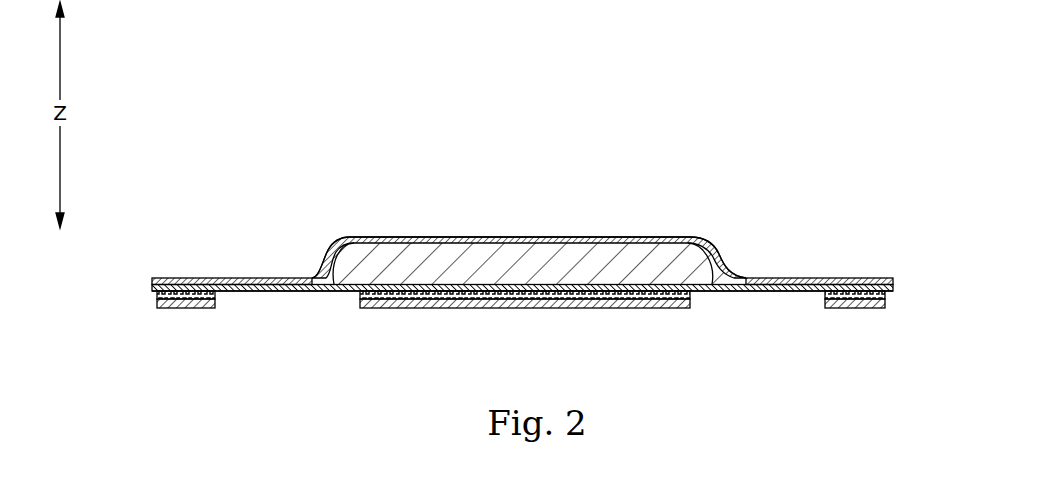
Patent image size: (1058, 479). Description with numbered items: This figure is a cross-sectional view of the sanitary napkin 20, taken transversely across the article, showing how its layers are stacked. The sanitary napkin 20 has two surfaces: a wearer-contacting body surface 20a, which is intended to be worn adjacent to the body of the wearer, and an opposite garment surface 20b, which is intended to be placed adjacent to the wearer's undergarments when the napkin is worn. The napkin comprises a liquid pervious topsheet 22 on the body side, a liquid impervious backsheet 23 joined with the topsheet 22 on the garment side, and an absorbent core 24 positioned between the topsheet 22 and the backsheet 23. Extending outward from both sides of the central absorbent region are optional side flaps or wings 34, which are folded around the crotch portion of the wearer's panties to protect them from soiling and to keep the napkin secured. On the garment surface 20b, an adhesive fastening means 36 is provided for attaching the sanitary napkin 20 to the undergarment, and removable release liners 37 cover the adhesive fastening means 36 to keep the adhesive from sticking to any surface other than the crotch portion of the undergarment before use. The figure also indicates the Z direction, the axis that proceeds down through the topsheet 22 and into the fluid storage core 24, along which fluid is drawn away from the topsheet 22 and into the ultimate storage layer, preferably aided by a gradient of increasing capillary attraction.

The sanitary napkin 20 is at (290, 213).
The body surface 20a is at (398, 235).
The garment surface 20b is at (299, 297).
The liquid pervious topsheet 22 is at (460, 240).
The liquid impervious backsheet 23 is at (757, 295).
The absorbent core 24 is at (608, 258).
The side flaps 34 is at (232, 280).
The adhesive fastening means 36 is at (155, 294).
The release liners 37 is at (175, 305).